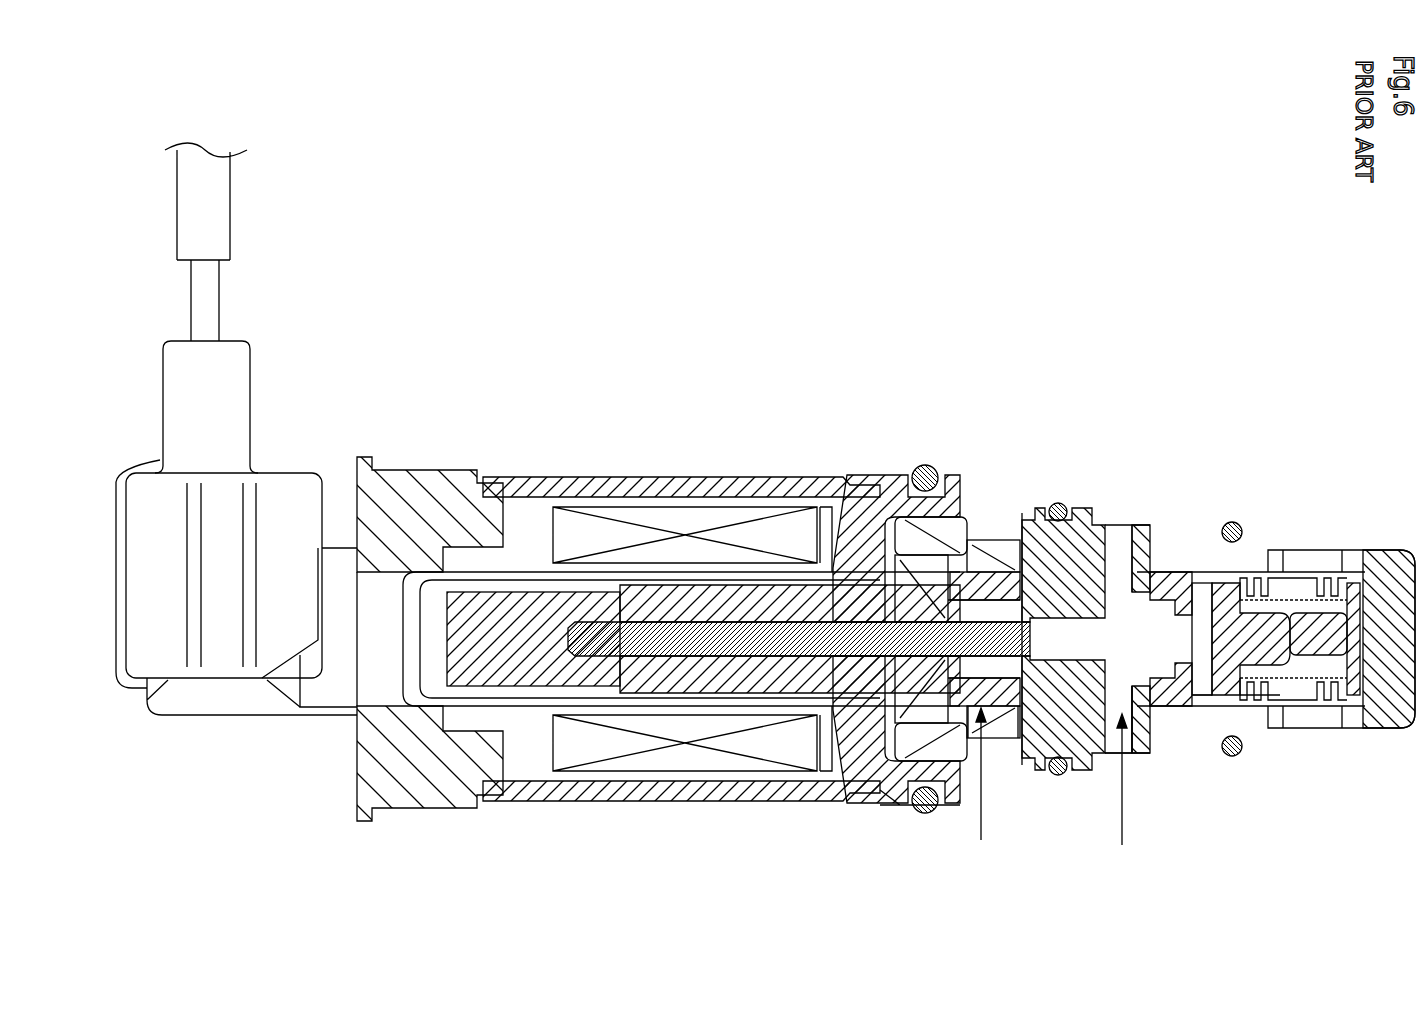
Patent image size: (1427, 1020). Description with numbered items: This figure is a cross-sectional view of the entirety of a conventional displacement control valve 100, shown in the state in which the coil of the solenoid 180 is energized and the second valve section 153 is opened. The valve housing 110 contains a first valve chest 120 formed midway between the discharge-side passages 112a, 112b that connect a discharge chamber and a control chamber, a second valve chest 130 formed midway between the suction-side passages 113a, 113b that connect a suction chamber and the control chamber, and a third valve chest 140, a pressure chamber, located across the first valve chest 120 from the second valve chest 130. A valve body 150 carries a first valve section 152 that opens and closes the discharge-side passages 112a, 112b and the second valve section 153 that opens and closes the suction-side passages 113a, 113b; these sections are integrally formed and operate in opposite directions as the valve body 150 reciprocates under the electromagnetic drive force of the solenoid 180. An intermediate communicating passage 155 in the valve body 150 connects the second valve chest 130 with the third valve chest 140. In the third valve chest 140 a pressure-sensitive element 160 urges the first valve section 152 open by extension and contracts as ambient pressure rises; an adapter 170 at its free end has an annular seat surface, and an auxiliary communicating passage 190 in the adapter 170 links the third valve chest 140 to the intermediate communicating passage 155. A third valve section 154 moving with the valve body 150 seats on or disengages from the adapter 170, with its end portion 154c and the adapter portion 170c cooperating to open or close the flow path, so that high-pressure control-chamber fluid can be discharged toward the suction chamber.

The displacement control valve 100 is at (420, 366).
The solenoid 180 is at (623, 432).
The valve housing 110 is at (1043, 500).
The second valve chest 130 is at (992, 566).
The second valve section 153 is at (988, 568).
The first valve chest 120 is at (1122, 572).
The first valve section 152 is at (1175, 572).
The third valve section 154 is at (1205, 595).
The auxiliary communicating passage 190 is at (1237, 522).
The adapter 170 is at (1232, 598).
The valve body 150 is at (1335, 560).
The third valve chest 140 is at (1350, 550).
The pressure-sensitive element 160 is at (1327, 713).
The intermediate communicating passage 155 is at (1262, 705).
The suction-side passage 113a is at (1010, 735).
The suction-side passage 113b is at (910, 790).
The discharge-side passage 112a is at (1108, 760).
The discharge-side passage 112b is at (1140, 690).
The valve portion 170c is at (1240, 700).
The valve element end 154c is at (1205, 695).